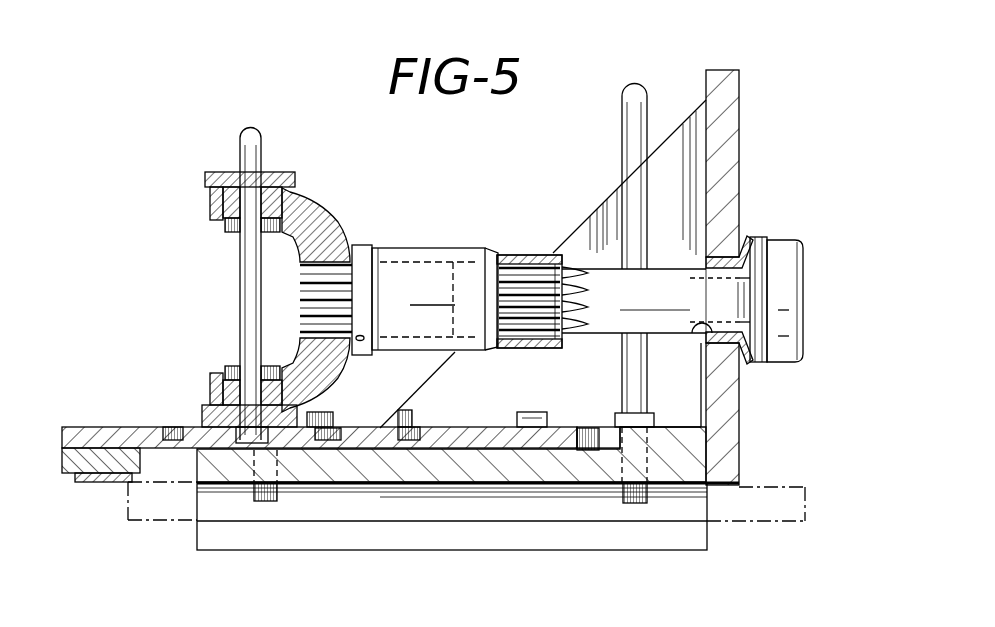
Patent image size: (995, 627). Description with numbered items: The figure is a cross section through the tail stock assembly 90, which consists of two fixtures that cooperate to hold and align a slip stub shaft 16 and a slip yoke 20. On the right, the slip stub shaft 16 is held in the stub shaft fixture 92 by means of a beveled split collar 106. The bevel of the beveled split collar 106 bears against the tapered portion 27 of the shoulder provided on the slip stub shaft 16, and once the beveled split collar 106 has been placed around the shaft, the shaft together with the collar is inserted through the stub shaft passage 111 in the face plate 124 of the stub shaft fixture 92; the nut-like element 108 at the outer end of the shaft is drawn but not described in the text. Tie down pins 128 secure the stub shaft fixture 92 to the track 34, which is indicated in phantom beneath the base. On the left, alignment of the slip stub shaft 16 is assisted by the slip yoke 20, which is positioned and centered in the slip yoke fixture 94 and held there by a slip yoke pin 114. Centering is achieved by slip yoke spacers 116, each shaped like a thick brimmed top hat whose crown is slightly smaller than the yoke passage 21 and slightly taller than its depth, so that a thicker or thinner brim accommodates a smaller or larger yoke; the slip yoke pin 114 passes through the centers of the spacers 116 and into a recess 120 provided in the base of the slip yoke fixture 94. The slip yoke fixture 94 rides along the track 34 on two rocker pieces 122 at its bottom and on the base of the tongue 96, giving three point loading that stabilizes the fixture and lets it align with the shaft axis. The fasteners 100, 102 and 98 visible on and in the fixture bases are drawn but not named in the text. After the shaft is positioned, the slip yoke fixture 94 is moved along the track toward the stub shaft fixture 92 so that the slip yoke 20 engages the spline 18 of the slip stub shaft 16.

The tail stock assembly 90 is at (178, 120).
The slip yoke fixture 94 is at (119, 422).
The rocker pieces 122 is at (96, 484).
The stub shaft fixture 92 is at (450, 488).
The tongue 96 is at (487, 433).
The track 34 is at (177, 522).
The fastener 100 is at (336, 421).
The recess 120 is at (420, 430).
The fastener 102 is at (531, 412).
The fastener 98 is at (614, 447).
The tapered portion 27 is at (724, 362).
The tie down pins 128 is at (633, 82).
The slip yoke pin 114 is at (244, 128).
The slip yoke spacers 116 is at (297, 172).
The yoke passage 21 is at (238, 228).
The slip yoke 20 is at (332, 222).
The spline 18 is at (537, 287).
The slip stub shaft 16 is at (627, 298).
The stub shaft passage 111 is at (696, 326).
The face plate 124 is at (740, 146).
The beveled split collar 106 is at (749, 233).
The nut 108 is at (776, 252).